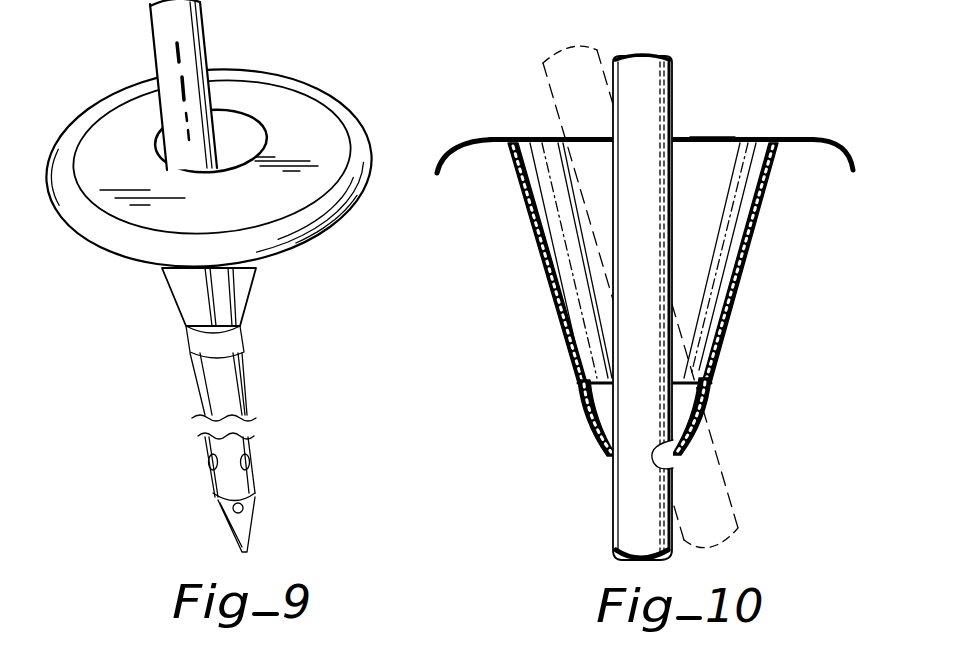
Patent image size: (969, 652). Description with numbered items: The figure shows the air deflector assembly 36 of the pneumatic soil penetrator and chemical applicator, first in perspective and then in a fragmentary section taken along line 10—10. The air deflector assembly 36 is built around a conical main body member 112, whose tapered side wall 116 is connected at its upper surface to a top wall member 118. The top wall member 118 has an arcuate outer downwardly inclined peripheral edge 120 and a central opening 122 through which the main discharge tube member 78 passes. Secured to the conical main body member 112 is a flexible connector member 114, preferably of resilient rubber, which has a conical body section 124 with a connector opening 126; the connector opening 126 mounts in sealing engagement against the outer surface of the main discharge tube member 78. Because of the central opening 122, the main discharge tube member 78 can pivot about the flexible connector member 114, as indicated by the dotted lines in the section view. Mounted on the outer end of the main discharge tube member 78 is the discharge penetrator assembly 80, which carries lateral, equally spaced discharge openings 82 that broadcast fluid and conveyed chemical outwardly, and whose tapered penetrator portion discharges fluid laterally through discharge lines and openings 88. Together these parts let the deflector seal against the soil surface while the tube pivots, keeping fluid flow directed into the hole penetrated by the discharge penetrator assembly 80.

In FIG. 9, the section line 10— 10 is at (190, 50).
In FIG. 9, the air deflector assembly 36 is at (347, 99).
In FIG. 10, the air deflector assembly 36 is at (726, 359).
In FIG. 9, the main discharge tube member 78 is at (185, 26).
In FIG. 10, the main discharge tube member 78 is at (655, 103).
In FIG. 9, the discharge penetrator assembly 80 is at (253, 480).
In FIG. 9, the discharge openings 82 is at (247, 476).
In FIG. 9, the discharge lines and openings 88 is at (232, 513).
In FIG. 9, the conical main body member 112 is at (147, 210).
In FIG. 10, the conical main body member 112 is at (742, 272).
In FIG. 9, the flexible connector member 114 is at (232, 338).
In FIG. 10, the flexible connector member 114 is at (690, 423).
In FIG. 9, the tapered side wall 116 is at (200, 293).
In FIG. 10, the tapered side wall 116 is at (573, 335).
In FIG. 10, the top wall member 118 is at (822, 136).
In FIG. 9, the arcuate outer downwardly inclined peripheral edge 120 is at (352, 226).
In FIG. 10, the arcuate outer downwardly inclined peripheral edge 120 is at (457, 152).
In FIG. 9, the central opening 122 is at (240, 118).
In FIG. 10, the central opening 122 is at (708, 138).
In FIG. 10, the conical body section 124 is at (603, 428).
In FIG. 10, the connector opening 126 is at (724, 480).